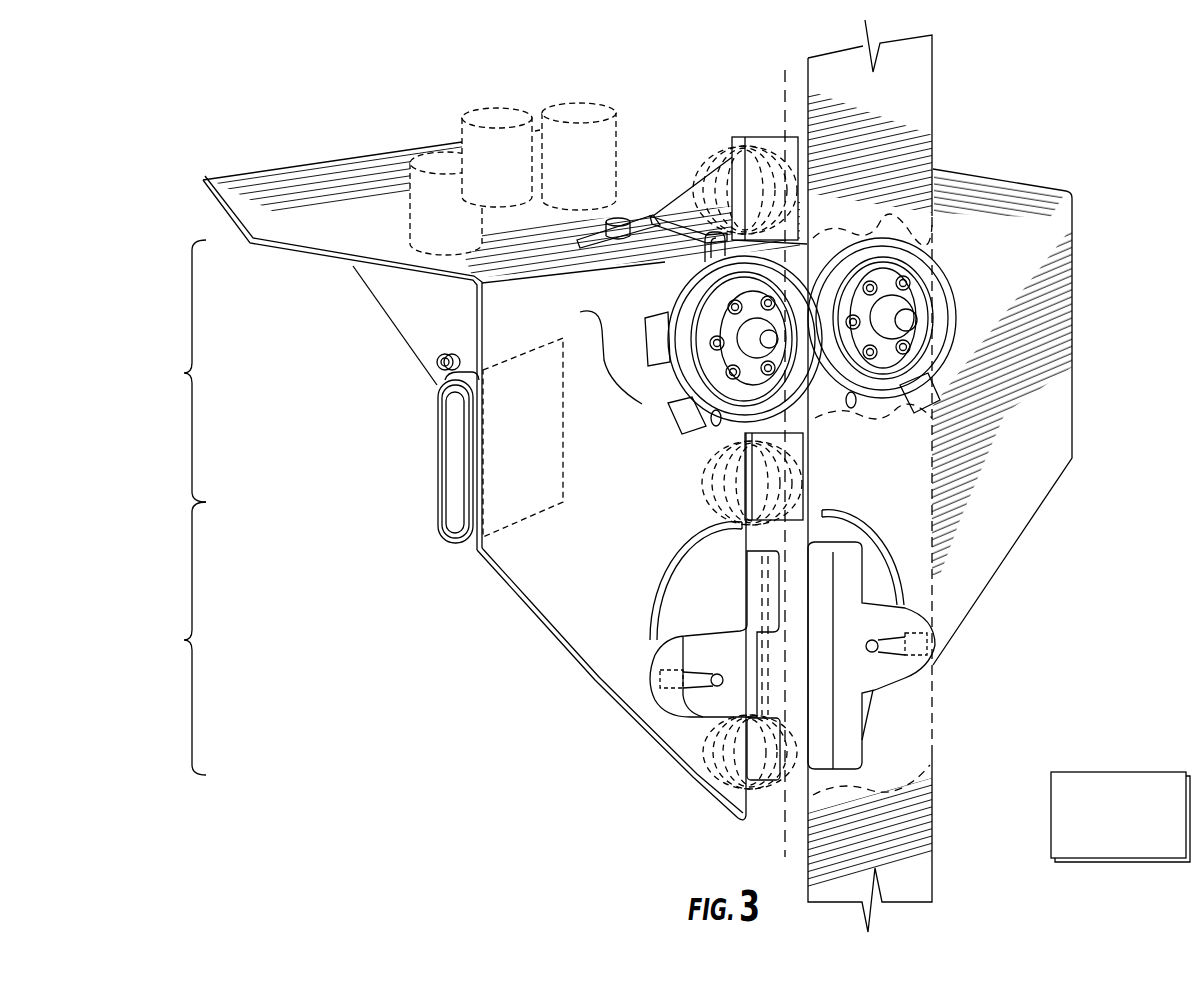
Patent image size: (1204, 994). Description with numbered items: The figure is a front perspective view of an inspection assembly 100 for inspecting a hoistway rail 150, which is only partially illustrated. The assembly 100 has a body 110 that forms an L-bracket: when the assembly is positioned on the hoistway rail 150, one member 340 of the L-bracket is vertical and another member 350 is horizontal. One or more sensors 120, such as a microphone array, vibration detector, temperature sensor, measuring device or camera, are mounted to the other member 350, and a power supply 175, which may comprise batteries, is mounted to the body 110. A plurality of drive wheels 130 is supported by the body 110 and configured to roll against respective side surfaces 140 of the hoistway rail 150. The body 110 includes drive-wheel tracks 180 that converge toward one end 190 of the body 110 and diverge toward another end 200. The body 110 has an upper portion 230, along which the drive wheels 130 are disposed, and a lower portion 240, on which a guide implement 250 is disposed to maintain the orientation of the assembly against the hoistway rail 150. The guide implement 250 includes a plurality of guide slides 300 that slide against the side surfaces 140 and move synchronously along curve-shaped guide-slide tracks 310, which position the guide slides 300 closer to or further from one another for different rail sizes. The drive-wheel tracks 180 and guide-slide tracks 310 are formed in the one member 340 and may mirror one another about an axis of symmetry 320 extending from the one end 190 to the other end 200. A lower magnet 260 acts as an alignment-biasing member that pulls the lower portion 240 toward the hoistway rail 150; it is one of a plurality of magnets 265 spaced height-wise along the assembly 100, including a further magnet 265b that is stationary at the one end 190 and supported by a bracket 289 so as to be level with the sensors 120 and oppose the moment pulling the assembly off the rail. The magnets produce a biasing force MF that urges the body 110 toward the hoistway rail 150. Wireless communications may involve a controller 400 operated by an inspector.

The inspection assembly 100 is at (1033, 410).
The body 110 is at (1063, 431).
The sensors 120 is at (450, 125).
The drive wheels 130 is at (975, 276).
The side surfaces 140 is at (867, 130).
The hoistway rail 150 is at (940, 476).
The power supply 175 is at (497, 442).
The drive-wheel tracks 180 is at (660, 418).
The one end 190 is at (653, 217).
The another end 200 is at (539, 549).
The upper portion 230 is at (179, 371).
The lower portion 240 is at (179, 638).
The guide implement 250 is at (953, 631).
The magnet 260 is at (805, 780).
The plurality of magnets 265 is at (697, 500).
The further magnet 265b is at (733, 146).
The bracket 289 is at (740, 188).
The guide slides 300 is at (937, 661).
The guide-slide tracks 310 is at (912, 547).
The axis of symmetry 320 is at (793, 848).
The one member 340 is at (1037, 349).
The another member 350 is at (232, 190).
The controller 400 is at (1021, 694).
The biasing force MF is at (800, 198).